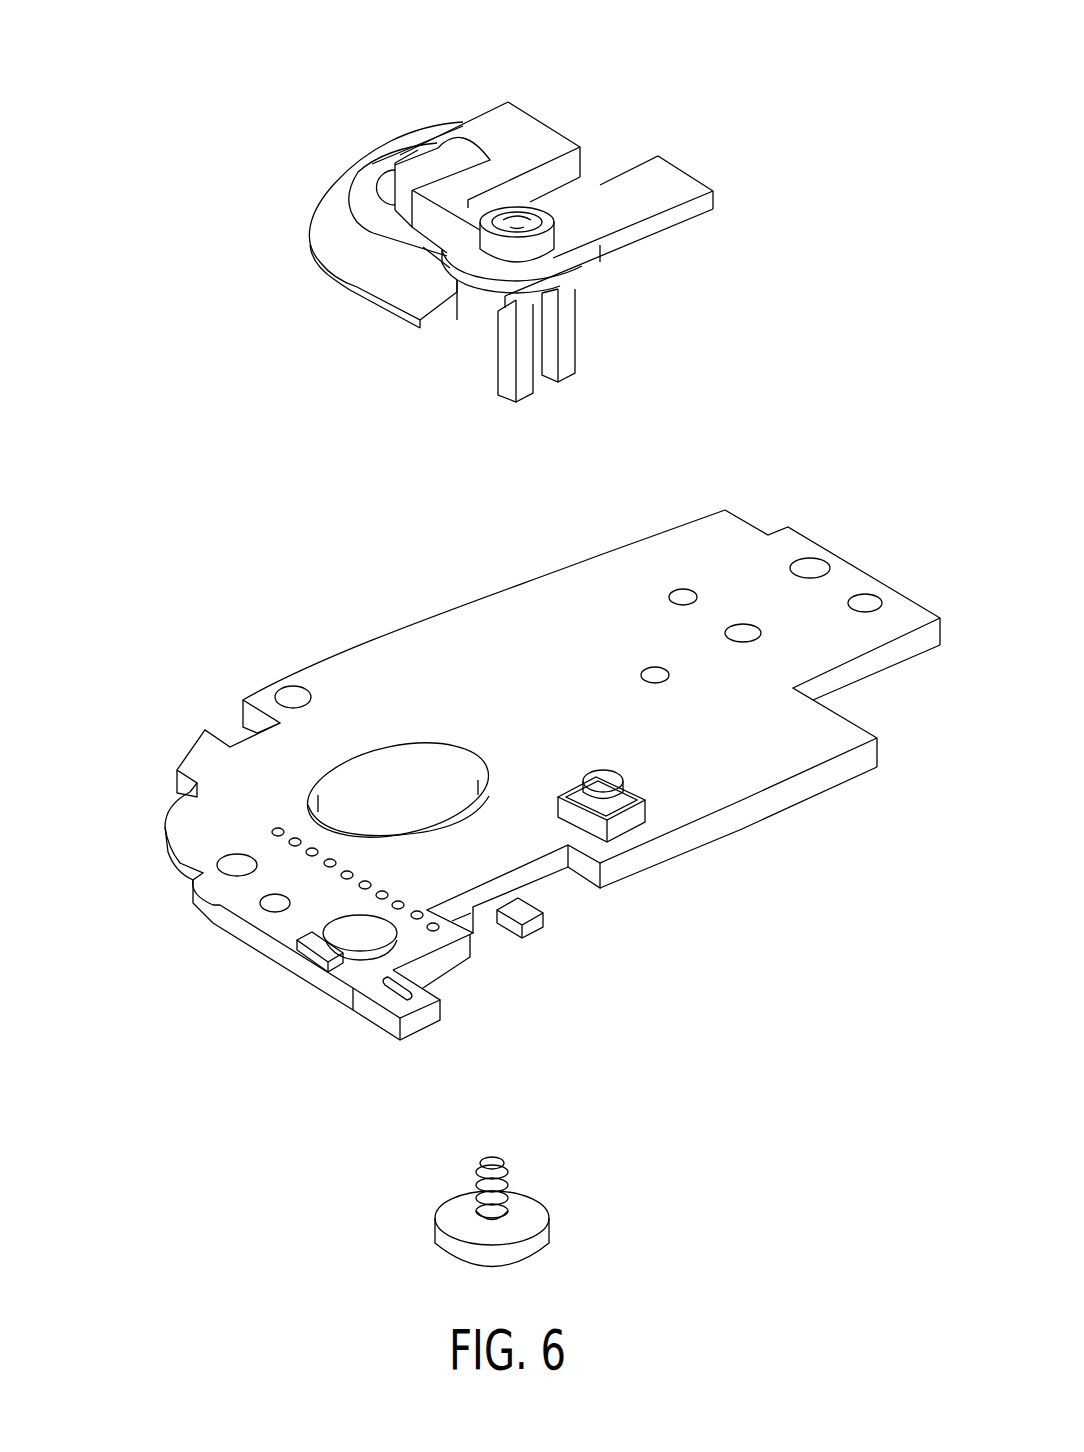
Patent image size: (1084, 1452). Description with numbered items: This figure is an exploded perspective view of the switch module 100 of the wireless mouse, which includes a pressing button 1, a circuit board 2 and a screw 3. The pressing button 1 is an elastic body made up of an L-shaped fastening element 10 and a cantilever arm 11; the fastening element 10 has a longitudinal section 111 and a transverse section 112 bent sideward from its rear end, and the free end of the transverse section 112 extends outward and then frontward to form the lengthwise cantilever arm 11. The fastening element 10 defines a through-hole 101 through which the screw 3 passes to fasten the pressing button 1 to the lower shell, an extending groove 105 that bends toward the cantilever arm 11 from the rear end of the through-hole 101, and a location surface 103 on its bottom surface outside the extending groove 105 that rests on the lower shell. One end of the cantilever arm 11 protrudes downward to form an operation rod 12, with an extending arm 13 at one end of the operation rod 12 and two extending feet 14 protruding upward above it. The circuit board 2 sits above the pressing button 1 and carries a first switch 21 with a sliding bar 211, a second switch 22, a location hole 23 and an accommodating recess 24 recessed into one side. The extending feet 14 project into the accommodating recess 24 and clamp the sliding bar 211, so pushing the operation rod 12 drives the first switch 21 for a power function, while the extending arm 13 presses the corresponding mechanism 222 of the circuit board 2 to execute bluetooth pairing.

The switch module 100 is at (124, 92).
The pressing button 1 is at (585, 122).
The fastening element 10 is at (511, 127).
The through-hole 101 is at (440, 173).
The location surface 103 is at (373, 210).
The extending groove 105 is at (437, 228).
The cantilever arm 11 is at (600, 222).
The longitudinal section 111 is at (538, 129).
The transverse section 112 is at (427, 289).
The operation rod 12 is at (531, 246).
The extending arm 13 is at (665, 191).
The extending feet 14 is at (524, 361).
The circuit board 2 is at (838, 800).
The first switch 21 is at (532, 922).
The sliding bar 211 is at (487, 940).
The second switch 22 is at (612, 818).
The corresponding mechanism 222 is at (712, 787).
The location hole 23 is at (383, 798).
The accommodating recess 24 is at (567, 885).
The screw 3 is at (560, 1220).